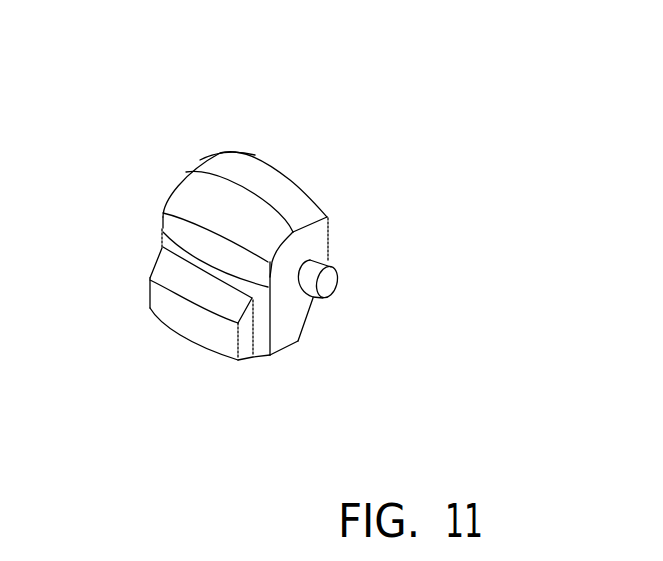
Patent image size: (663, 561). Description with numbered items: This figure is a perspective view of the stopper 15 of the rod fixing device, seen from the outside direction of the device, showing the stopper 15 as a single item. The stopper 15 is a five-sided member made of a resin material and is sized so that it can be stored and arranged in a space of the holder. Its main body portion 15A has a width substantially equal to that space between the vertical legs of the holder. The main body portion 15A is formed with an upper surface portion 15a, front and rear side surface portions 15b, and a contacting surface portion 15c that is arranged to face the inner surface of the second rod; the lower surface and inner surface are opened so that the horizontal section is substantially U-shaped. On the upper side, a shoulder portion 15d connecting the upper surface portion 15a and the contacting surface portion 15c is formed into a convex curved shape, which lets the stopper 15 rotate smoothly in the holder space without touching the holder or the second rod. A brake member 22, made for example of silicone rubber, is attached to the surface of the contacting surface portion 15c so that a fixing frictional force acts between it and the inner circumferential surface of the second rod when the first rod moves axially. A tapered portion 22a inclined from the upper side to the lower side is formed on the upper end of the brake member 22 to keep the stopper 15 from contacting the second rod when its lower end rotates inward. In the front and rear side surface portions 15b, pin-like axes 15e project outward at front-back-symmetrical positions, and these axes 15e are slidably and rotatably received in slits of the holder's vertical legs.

The stopper 15 is at (358, 117).
The main body portion 15A is at (330, 233).
The upper surface portion 15a is at (232, 168).
The front and rear side surface portions 15b is at (286, 310).
The contacting surface portion 15c is at (260, 333).
The shoulder portion 15d is at (200, 200).
The pin-like axes 15e is at (336, 274).
The brake member 22 is at (186, 319).
The tapered portion 22a is at (181, 280).